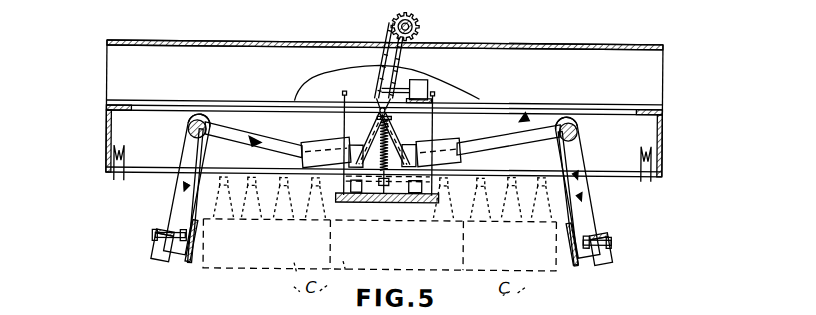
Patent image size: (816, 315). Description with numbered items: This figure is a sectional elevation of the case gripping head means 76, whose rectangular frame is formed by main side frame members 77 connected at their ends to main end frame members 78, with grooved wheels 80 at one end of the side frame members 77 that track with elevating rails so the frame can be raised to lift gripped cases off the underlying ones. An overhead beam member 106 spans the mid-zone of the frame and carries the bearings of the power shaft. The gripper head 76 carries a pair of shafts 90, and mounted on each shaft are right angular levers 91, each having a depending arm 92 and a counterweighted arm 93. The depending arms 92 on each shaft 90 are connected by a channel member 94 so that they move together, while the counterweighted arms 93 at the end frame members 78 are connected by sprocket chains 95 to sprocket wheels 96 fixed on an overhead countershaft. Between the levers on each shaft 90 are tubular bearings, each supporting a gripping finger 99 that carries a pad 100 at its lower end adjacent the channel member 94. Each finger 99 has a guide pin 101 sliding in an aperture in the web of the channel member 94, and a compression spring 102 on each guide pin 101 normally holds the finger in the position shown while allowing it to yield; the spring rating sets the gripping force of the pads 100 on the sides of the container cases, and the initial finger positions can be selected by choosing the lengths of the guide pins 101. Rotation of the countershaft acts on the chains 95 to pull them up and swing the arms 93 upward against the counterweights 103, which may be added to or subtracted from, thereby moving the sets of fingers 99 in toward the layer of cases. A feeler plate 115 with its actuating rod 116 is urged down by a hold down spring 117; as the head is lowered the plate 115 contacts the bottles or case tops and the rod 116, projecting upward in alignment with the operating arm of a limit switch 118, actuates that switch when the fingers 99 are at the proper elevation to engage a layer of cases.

The case gripping head means 76 is at (674, 78).
The main side frame members 77 is at (107, 138).
The main end frame members 78 is at (135, 119).
The grooved wheels 80 is at (115, 180).
The shafts 90 is at (188, 133).
The right angular levers 91 is at (197, 118).
The depending arm 92 is at (177, 185).
The counterweighted arm 93 is at (235, 126).
The channel member 94 is at (170, 257).
The sprocket chains 95 is at (381, 46).
The sprocket wheels 96 is at (418, 16).
The gripping finger 99 is at (208, 158).
The pads 100 is at (197, 267).
The guide pin 101 is at (177, 263).
The compression spring 102 is at (197, 235).
The counterweights 103 is at (300, 140).
The overhead beam member 106 is at (108, 68).
The feeler plate 115 is at (397, 207).
The actuating rod 116 is at (380, 110).
The hold down spring 117 is at (376, 131).
The limit switch 118 is at (428, 86).